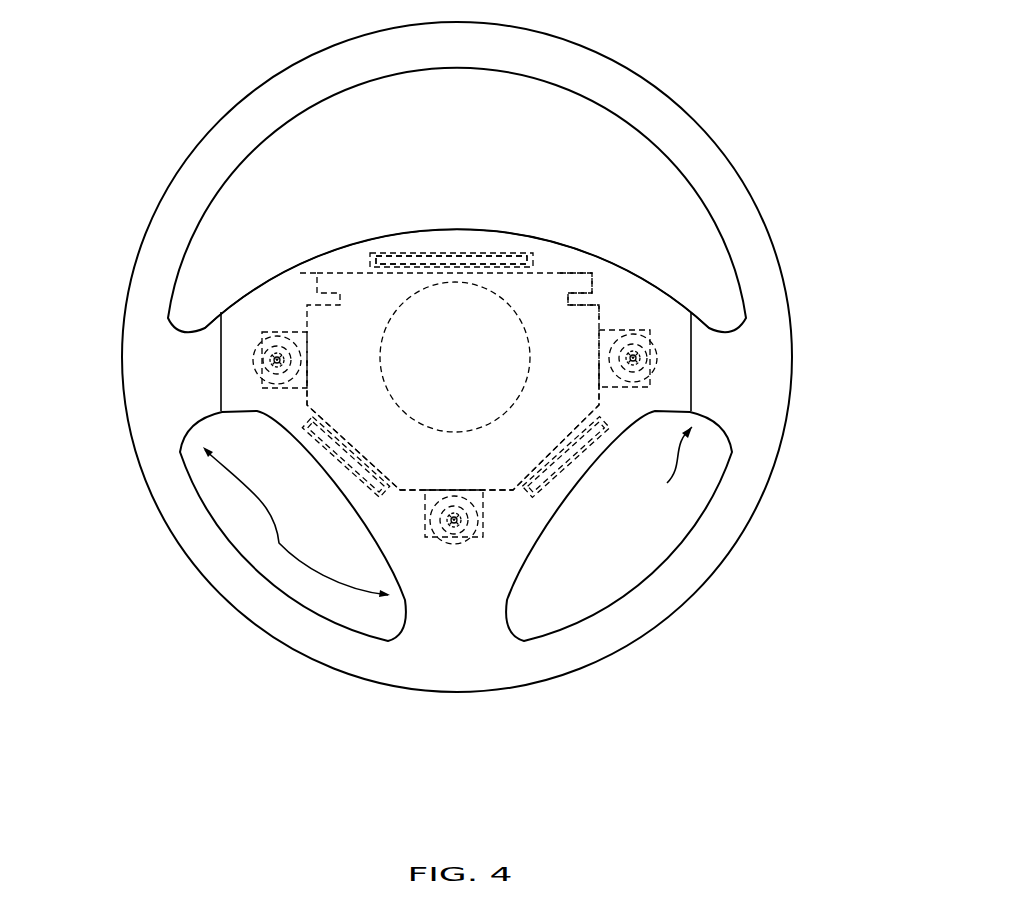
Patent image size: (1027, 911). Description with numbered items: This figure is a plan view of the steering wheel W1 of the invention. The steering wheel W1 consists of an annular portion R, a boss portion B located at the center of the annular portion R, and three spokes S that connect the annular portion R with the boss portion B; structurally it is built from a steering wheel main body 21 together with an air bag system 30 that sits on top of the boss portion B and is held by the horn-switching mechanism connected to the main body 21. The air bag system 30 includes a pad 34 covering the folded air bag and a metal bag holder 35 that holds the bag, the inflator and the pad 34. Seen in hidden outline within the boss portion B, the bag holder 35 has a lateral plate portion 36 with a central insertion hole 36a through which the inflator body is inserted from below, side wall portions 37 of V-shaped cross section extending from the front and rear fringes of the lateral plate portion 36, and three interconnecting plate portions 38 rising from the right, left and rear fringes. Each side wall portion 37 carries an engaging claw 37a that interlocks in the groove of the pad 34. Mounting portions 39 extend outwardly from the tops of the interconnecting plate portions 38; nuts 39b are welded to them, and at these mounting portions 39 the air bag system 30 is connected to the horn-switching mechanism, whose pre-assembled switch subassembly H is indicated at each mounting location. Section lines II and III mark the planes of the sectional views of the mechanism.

The steering wheel W1 is at (707, 76).
The annular portion R is at (206, 148).
The steering wheel main body 21 is at (670, 593).
The spokes S is at (447, 512).
The air bag system 30 is at (355, 257).
The pad 34 is at (457, 278).
The bag holder 35 is at (568, 262).
The lateral plate portion 36 is at (593, 303).
The insertion hole 36a is at (392, 318).
The side wall portions 37 is at (393, 253).
The engaging claws 37a is at (468, 253).
The interconnecting plate portions 38 is at (310, 367).
The mounting portions 39 is at (257, 380).
The nuts 39b is at (270, 333).
The switch subassembly H is at (250, 346).
The boss portion B is at (518, 215).
The section line II is at (117, 357).
The section line III is at (457, 222).